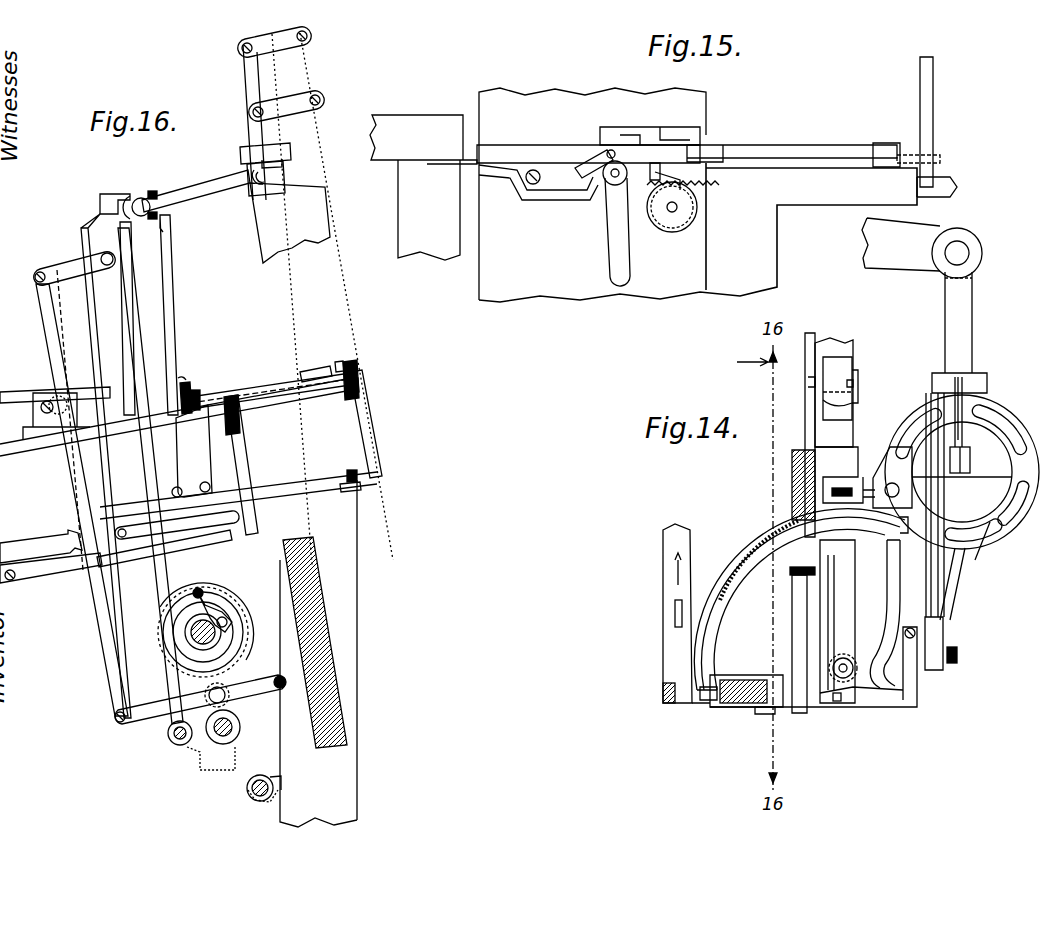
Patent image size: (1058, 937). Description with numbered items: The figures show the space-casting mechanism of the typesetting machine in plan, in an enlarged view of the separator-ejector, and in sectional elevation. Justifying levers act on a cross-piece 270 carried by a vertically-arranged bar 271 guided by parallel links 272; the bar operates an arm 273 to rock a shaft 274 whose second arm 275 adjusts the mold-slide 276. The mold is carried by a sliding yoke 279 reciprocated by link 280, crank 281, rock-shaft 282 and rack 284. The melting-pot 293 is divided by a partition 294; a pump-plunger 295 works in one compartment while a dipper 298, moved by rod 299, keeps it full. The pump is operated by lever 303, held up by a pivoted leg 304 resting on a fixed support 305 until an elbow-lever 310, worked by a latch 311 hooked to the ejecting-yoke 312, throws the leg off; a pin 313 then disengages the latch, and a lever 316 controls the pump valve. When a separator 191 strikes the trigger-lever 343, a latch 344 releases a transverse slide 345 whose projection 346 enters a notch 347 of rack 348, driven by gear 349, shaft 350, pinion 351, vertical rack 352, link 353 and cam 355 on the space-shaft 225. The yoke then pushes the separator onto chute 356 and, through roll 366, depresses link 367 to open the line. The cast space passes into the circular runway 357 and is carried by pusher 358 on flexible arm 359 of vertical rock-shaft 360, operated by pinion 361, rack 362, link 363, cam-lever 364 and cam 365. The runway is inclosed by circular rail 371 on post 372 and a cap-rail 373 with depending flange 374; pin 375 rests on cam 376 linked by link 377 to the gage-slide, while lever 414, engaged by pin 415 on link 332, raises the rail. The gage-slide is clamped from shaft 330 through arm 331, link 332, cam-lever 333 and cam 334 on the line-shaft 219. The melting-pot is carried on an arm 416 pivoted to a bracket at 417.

In FIG. 14, the separators 191 is at (675, 610).
In FIG. 16, the line-shaft 219 is at (213, 745).
In FIG. 16, the space-shaft 225 is at (208, 697).
In FIG. 16, the cross-piece 270 is at (240, 154).
In FIG. 16, the vertically-arranged bar 271 is at (244, 75).
In FIG. 16, the parallel links 272 is at (297, 97).
In FIG. 16, the arm 273 is at (268, 186).
In FIG. 16, the shaft 274 is at (218, 197).
In FIG. 16, the second arm 275 is at (146, 197).
In FIG. 16, the mold-slide 276 is at (126, 197).
In FIG. 14, the sliding yoke 279 is at (793, 462).
In FIG. 16, the link 280 is at (85, 385).
In FIG. 14, the link 280 is at (815, 413).
In FIG. 16, the crank 281 is at (35, 397).
In FIG. 14, the crank 281 is at (805, 384).
In FIG. 14, the rock-shaft 282 is at (853, 405).
In FIG. 16, the rack 284 is at (68, 545).
In FIG. 14, the rack 284 is at (855, 383).
In FIG. 14, the melting-pot 293 is at (1030, 510).
In FIG. 14, the partition 294 is at (968, 540).
In FIG. 14, the pump-plunger 295 is at (893, 466).
In FIG. 14, the dipper 298 is at (962, 473).
In FIG. 14, the rod 299 is at (975, 372).
In FIG. 14, the lever 303 is at (940, 440).
In FIG. 15, the pivoted leg 304 is at (934, 103).
In FIG. 15, the fixed support 305 is at (957, 188).
In FIG. 15, the elbow-lever 310 is at (941, 159).
In FIG. 14, the elbow-lever 310 is at (944, 640).
In FIG. 15, the latch 311 is at (797, 145).
In FIG. 14, the latch 311 is at (895, 708).
In FIG. 15, the ejecting-yoke 312 is at (528, 145).
In FIG. 14, the ejecting-yoke 312 is at (740, 677).
In FIG. 14, the pin 313 is at (836, 710).
In FIG. 14, the lever 316 is at (966, 400).
In FIG. 16, the shaft 330 is at (102, 252).
In FIG. 16, the arm 331 is at (60, 266).
In FIG. 16, the link 332 is at (45, 335).
In FIG. 16, the cam-lever 333 is at (143, 718).
In FIG. 16, the cam 334 is at (238, 733).
In FIG. 15, the trigger-lever 343 is at (498, 183).
In FIG. 14, the trigger-lever 343 is at (703, 708).
In FIG. 15, the latch 344 is at (593, 160).
In FIG. 14, the latch 344 is at (763, 716).
In FIG. 15, the transverse slide 345 is at (670, 140).
In FIG. 14, the transverse slide 345 is at (798, 714).
In FIG. 15, the projection 346 is at (658, 220).
In FIG. 15, the notch 347 is at (690, 182).
In FIG. 16, the rack 348 is at (358, 366).
In FIG. 15, the rack 348 is at (665, 172).
In FIG. 16, the gear 349 is at (359, 392).
In FIG. 15, the gear 349 is at (690, 200).
In FIG. 16, the shaft 350 is at (348, 405).
In FIG. 16, the pinion 351 is at (240, 395).
In FIG. 16, the vertical rack 352 is at (243, 445).
In FIG. 16, the link 353 is at (262, 545).
In FIG. 16, the cam 355 is at (195, 640).
In FIG. 15, the chute 356 is at (437, 158).
In FIG. 14, the chute 356 is at (678, 528).
In FIG. 14, the circular runway 357 is at (748, 572).
In FIG. 14, the pusher 358 is at (850, 558).
In FIG. 16, the flexible arm 359 is at (298, 374).
In FIG. 14, the flexible arm 359 is at (880, 610).
In FIG. 16, the vertical rock-shaft 360 is at (333, 368).
In FIG. 14, the vertical rock-shaft 360 is at (848, 690).
In FIG. 16, the pinion 361 is at (360, 472).
In FIG. 16, the rack 362 is at (361, 488).
In FIG. 16, the link 363 is at (148, 528).
In FIG. 16, the cam-lever 364 is at (138, 597).
In FIG. 16, the cam 365 is at (170, 627).
In FIG. 15, the roll 366 is at (607, 183).
In FIG. 15, the link 367 is at (612, 258).
In FIG. 16, the circular rail 371 is at (182, 400).
In FIG. 16, the vertically-movable post 372 is at (222, 482).
In FIG. 16, the stationary circular cap-rail 373 is at (195, 390).
In FIG. 16, the depending flange 374 is at (185, 385).
In FIG. 14, the depending flange 374 is at (768, 548).
In FIG. 16, the pin 375 is at (178, 416).
In FIG. 16, the cam 376 is at (186, 458).
In FIG. 16, the link 377 is at (135, 282).
In FIG. 16, the lever 414 is at (198, 545).
In FIG. 16, the pin 415 is at (96, 578).
In FIG. 14, the arm 416 is at (975, 315).
In FIG. 14, the bracket pivot 417 is at (970, 255).